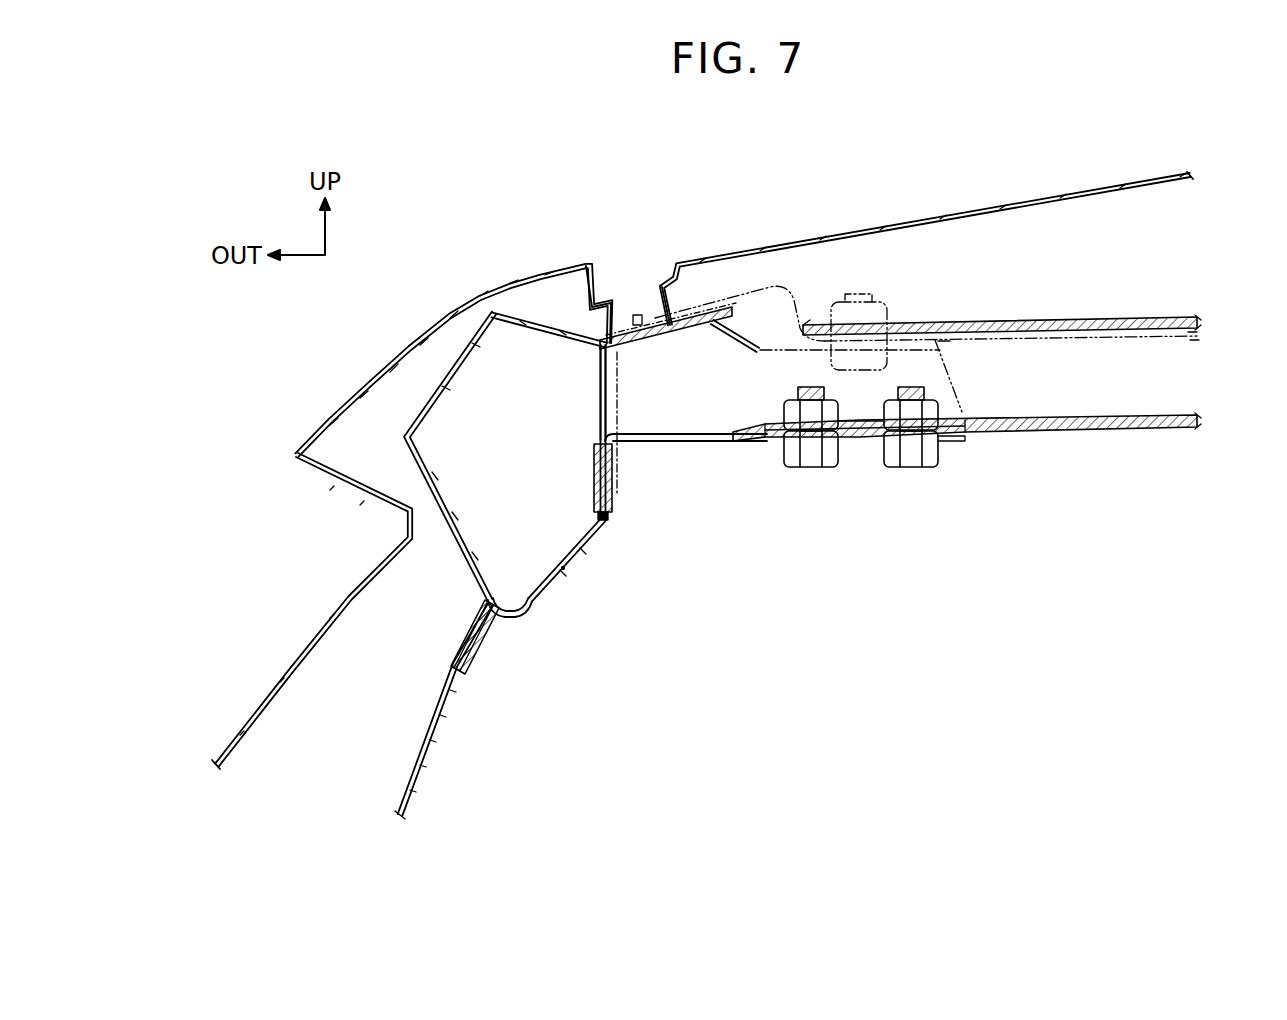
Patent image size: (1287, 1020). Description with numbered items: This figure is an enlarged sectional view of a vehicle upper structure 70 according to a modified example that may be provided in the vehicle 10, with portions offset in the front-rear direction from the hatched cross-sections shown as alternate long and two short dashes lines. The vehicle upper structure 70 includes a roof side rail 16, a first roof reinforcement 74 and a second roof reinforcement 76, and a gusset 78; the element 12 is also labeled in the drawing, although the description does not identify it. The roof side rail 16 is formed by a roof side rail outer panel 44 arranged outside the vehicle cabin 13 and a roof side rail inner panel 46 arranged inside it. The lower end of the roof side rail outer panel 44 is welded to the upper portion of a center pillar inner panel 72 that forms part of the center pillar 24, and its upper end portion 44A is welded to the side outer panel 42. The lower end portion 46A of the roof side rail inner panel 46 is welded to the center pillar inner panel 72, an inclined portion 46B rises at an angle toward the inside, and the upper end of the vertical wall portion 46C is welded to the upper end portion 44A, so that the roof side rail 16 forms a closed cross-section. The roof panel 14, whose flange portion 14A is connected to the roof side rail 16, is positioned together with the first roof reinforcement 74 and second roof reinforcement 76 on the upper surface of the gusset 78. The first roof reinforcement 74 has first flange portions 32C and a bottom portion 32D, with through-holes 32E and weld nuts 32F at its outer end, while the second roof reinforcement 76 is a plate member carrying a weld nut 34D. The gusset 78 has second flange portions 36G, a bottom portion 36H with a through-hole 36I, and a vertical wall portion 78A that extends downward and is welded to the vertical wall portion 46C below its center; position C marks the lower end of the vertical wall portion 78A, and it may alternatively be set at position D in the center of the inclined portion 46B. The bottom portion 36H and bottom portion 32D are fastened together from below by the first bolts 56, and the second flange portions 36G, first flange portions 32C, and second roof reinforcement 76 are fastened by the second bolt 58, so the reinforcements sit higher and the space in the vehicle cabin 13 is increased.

The vehicle 10 is at (525, 245).
The roof panel bracket / lower plate 12 is at (985, 437).
The vehicle cabin 13 is at (900, 572).
The roof panel 14 is at (895, 215).
The flange portion 14A is at (633, 313).
The roof side rail 16 is at (512, 305).
The center pillar 24 is at (420, 787).
The first flange portions 32C is at (1160, 339).
The bottom portion 32D is at (1120, 430).
The through-holes 32E is at (790, 412).
The weld nuts 32F is at (880, 398).
The weld nut 34D is at (885, 312).
The second flange portions 36G is at (950, 346).
The bottom portion 36H is at (955, 442).
The through-hole 36I is at (800, 452).
The side outer panel 42 is at (425, 335).
The roof side rail outer panel 44 is at (557, 325).
The upper end portion 44A is at (655, 350).
The roof side rail inner panel 46 is at (598, 412).
The lower end portion 46A is at (478, 650).
The inclined portion 46B is at (545, 600).
The vertical wall portion 46C is at (598, 370).
The first bolts 56 is at (905, 470).
The second bolt 58 is at (740, 352).
The vehicle upper structure 70 is at (735, 545).
The center pillar inner panel 72 is at (452, 698).
The first roof reinforcement 74 is at (1068, 342).
The second roof reinforcement 76 is at (1043, 320).
The gusset 78 is at (760, 355).
The vertical wall portion 78A is at (615, 482).
The position C is at (608, 517).
The position D is at (563, 570).